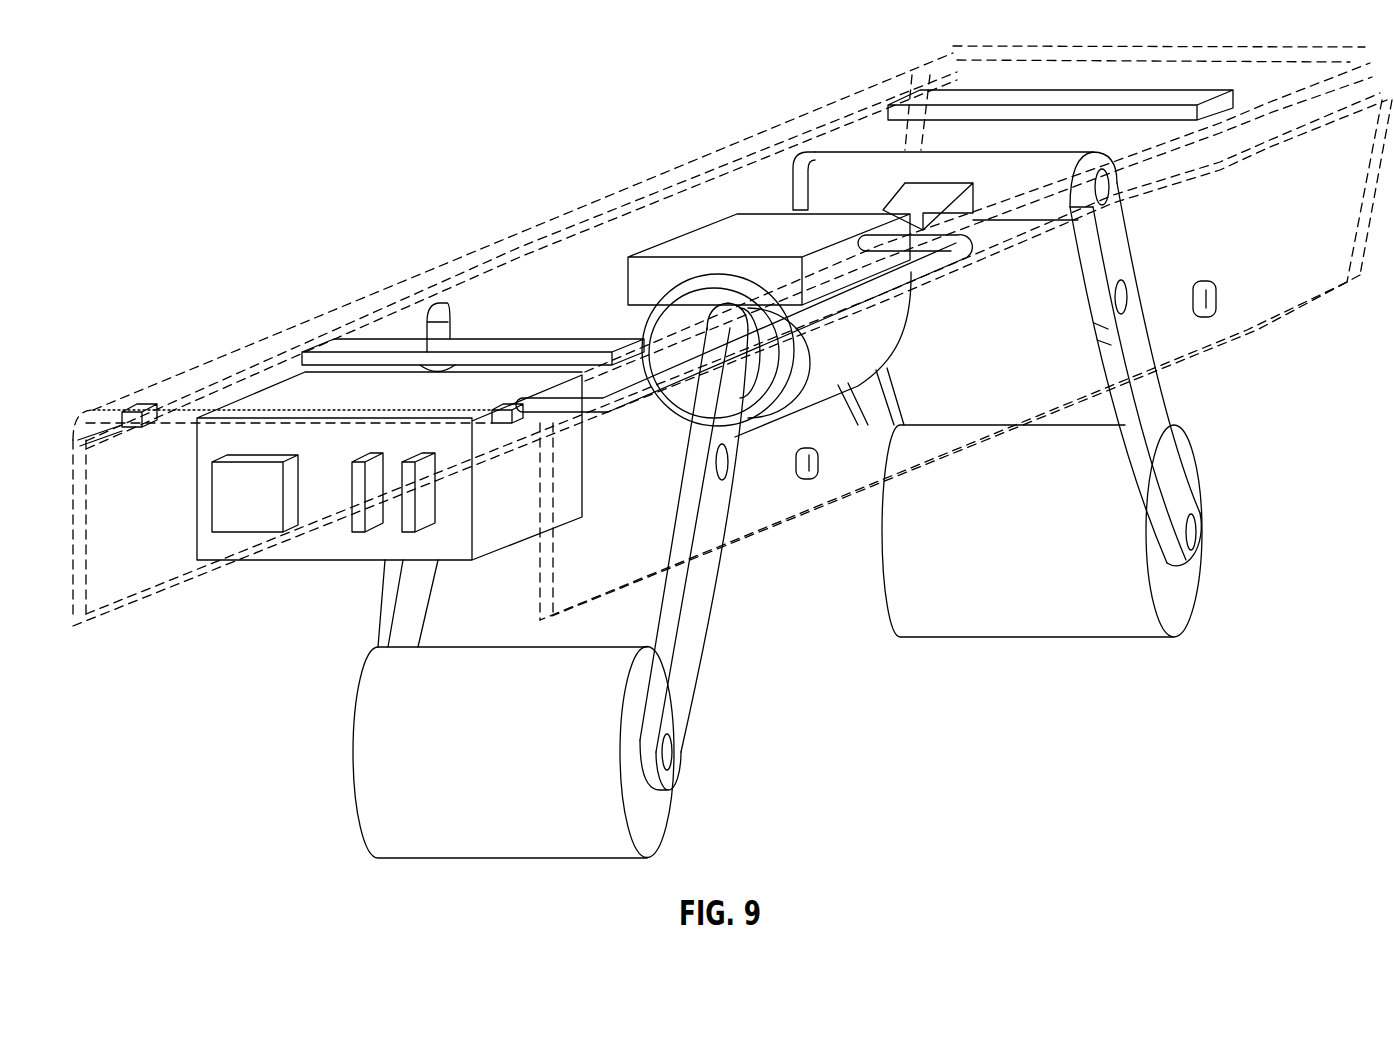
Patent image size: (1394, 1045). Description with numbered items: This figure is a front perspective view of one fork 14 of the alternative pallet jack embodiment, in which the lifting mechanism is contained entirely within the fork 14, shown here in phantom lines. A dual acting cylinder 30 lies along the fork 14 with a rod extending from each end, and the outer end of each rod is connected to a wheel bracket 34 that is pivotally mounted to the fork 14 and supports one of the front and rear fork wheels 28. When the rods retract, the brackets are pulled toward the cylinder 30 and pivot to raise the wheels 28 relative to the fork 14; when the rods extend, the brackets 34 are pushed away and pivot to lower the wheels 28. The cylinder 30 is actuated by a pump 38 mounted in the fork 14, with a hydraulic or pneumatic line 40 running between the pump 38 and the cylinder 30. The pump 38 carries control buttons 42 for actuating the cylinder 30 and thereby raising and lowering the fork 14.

The fork 14 is at (520, 228).
The fork wheel 28 is at (648, 815).
The dual acting cylinder 30 is at (740, 238).
The wheel bracket 34 is at (693, 598).
The pump 38 is at (260, 547).
The hydraulic or pneumatic line 40 is at (933, 265).
The control button 42 is at (232, 503).